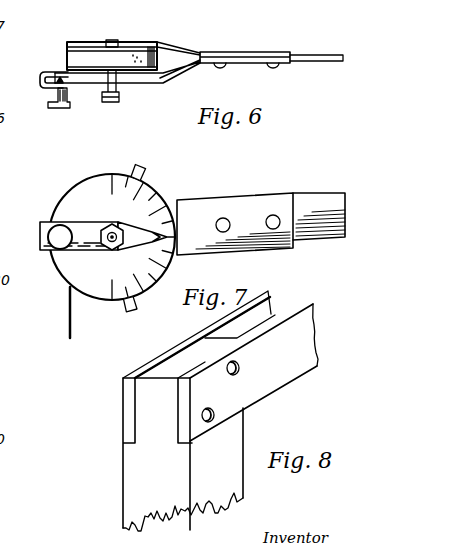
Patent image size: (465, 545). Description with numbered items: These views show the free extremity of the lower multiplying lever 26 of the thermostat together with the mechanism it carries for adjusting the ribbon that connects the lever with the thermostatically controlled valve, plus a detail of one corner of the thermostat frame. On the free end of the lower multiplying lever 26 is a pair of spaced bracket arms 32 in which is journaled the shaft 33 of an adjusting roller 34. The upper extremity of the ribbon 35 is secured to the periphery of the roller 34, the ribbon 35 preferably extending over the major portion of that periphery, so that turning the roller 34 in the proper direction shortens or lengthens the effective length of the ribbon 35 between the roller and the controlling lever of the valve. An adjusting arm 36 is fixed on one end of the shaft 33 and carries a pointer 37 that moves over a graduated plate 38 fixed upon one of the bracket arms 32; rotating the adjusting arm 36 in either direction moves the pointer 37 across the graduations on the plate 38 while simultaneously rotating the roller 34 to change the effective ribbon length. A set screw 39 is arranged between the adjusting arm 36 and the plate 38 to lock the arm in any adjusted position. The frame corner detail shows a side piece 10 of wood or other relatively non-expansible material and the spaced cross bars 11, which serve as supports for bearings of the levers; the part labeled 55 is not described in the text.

In FIG. 8, the side pieces 10 is at (133, 503).
In FIG. 8, the cross bars 11 is at (277, 297).
In FIG. 6, the lower multiplying lever 26 is at (323, 55).
In FIG. 7, the lower multiplying lever 26 is at (312, 208).
In FIG. 6, the bracket arms 32 is at (185, 45).
In FIG. 7, the bracket arms 32 is at (228, 207).
In FIG. 6, the shaft 33 is at (110, 38).
In FIG. 6, the adjusting roller 34 is at (143, 48).
In FIG. 6, the ribbon 35 is at (67, 42).
In FIG. 6, the adjusting arm 36 is at (87, 89).
In FIG. 7, the adjusting arm 36 is at (75, 226).
In FIG. 7, the pointer 37 is at (168, 220).
In FIG. 7, the graduated plate 38 is at (92, 190).
In FIG. 6, the set screw 39 is at (56, 107).
In FIG. 7, the set screw 39 is at (62, 243).
In FIG. 7, the stop 55 is at (70, 333).